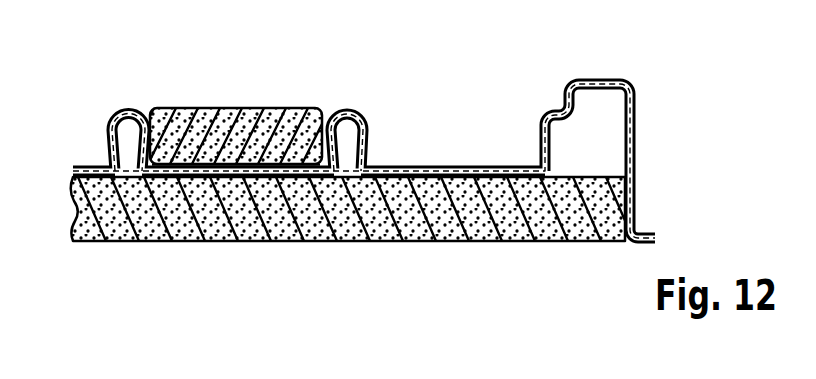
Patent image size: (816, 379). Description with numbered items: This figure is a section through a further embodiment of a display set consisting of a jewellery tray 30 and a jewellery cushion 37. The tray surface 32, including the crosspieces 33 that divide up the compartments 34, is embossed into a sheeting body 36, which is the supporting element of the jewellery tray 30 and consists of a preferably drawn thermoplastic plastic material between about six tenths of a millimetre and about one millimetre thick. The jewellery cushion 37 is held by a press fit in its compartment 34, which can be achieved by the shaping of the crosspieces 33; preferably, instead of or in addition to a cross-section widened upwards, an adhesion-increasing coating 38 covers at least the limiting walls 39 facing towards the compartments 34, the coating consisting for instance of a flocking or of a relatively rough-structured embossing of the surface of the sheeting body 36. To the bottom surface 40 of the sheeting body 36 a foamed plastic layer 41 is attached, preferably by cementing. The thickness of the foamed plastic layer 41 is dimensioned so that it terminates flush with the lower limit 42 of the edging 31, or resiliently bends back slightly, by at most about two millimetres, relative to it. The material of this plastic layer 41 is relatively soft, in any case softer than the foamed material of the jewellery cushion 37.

The jewellery tray 30 is at (239, 174).
The edging 31 is at (636, 84).
The tray surface 32 is at (455, 165).
The crosspieces 33 is at (122, 107).
The compartments 34 is at (500, 166).
The sheeting body 36 is at (610, 77).
The jewellery cushion 37 is at (230, 120).
The adhesion-increasing coating 38 is at (590, 77).
The limiting walls 39 is at (368, 135).
The bottom surface 40 is at (205, 168).
The foamed plastic layer 41 is at (417, 222).
The lower limit 42 is at (640, 247).